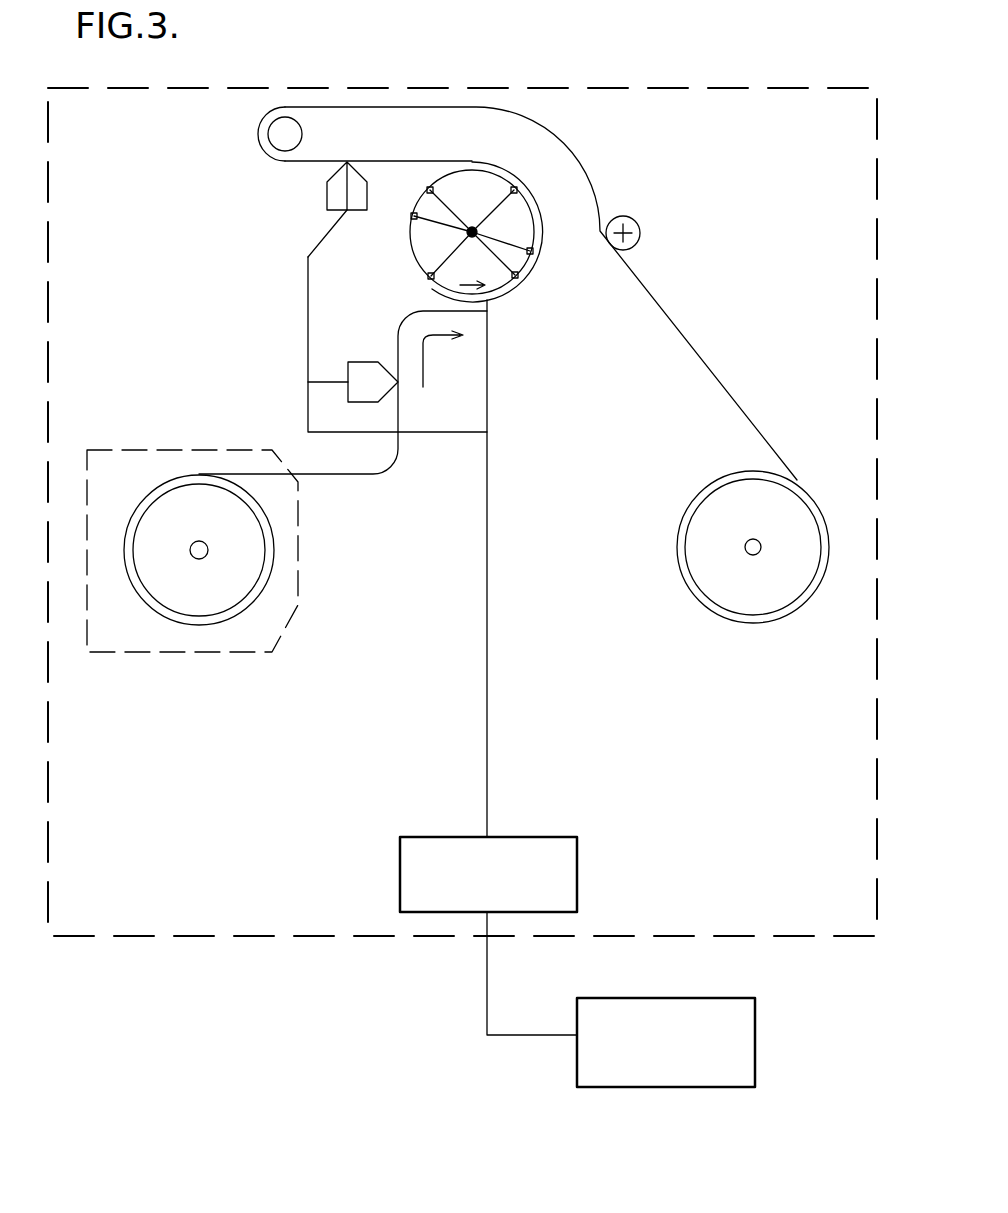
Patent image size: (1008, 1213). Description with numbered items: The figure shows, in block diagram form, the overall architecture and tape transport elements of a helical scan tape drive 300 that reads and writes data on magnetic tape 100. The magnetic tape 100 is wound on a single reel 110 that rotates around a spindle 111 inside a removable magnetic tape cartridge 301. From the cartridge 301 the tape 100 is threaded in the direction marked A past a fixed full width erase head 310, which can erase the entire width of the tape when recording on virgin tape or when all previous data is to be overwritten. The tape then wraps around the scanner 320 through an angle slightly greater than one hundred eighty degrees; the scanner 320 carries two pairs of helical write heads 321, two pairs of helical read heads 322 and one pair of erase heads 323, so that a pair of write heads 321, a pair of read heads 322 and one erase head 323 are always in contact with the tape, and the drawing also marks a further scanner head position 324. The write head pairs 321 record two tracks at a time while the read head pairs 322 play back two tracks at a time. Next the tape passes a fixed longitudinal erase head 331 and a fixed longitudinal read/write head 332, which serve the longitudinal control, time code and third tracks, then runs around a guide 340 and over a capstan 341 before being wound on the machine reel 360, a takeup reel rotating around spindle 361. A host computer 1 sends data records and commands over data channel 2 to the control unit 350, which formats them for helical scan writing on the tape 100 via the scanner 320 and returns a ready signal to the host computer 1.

The host computer 1 is at (660, 998).
The data channel 2 is at (486, 977).
The magnetic tape 100 is at (330, 474).
The reel 110 is at (233, 569).
The spindle 111 is at (194, 541).
The helical scan tape drive 300 is at (302, 937).
The magnetic tape cartridge 301 is at (300, 597).
The full width erase head 310 is at (367, 402).
The scanner 320 is at (355, 234).
The helical write heads 321 is at (520, 283).
The helical read heads 322 is at (517, 188).
The erase heads 323 is at (532, 255).
The read head 324 is at (426, 278).
The longitudinal erase head 331 is at (358, 210).
The longitudinal read/write head 332 is at (327, 198).
The guide 340 is at (262, 124).
The capstan 341 is at (636, 246).
The control unit 350 is at (578, 870).
The machine reel 360 is at (708, 580).
The spindle 361 is at (752, 539).